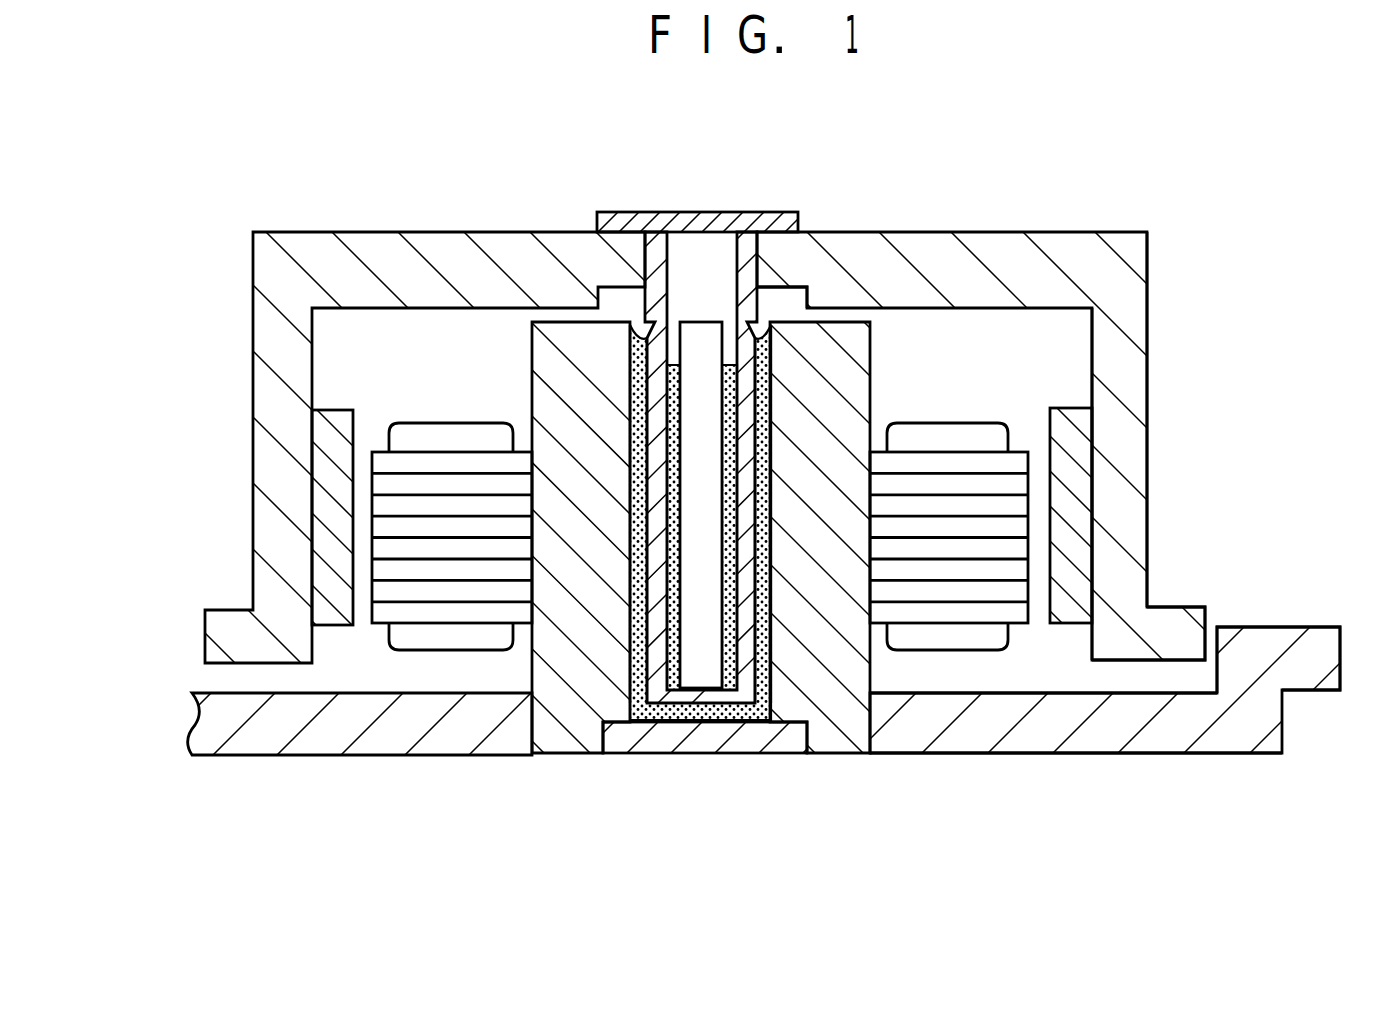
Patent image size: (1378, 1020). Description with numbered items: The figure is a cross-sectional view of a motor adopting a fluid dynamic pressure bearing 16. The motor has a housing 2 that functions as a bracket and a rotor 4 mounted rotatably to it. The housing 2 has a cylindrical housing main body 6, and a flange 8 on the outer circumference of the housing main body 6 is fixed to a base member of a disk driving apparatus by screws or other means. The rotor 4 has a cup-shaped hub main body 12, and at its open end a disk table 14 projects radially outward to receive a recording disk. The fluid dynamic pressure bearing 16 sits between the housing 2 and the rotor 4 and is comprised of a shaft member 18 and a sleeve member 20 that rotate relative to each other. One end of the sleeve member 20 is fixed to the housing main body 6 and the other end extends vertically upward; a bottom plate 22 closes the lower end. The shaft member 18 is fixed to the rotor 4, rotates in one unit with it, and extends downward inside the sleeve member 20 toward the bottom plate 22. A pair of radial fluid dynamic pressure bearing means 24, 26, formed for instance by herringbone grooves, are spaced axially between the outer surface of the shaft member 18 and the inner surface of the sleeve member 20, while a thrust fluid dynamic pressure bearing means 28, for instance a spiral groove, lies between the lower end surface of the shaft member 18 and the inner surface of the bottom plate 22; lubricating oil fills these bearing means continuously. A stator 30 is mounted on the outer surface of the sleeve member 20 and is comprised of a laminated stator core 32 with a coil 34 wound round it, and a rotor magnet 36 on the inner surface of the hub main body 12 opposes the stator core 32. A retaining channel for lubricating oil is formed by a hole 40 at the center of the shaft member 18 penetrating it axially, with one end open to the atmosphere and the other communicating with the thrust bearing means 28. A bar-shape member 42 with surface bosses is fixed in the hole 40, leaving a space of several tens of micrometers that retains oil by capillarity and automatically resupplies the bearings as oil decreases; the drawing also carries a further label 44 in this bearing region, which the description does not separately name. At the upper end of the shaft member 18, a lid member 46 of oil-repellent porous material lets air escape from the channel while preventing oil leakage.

The housing 2 is at (763, 730).
The rotor 4 is at (689, 414).
The housing main body 6 is at (914, 740).
The flange 8 is at (1310, 675).
The hub main body 12 is at (1138, 403).
The disk table 14 is at (1177, 618).
The fluid dynamic pressure bearing 16 is at (703, 572).
The shaft member 18 is at (772, 292).
The sleeve member 20 is at (553, 733).
The bottom plate 22 is at (630, 745).
The radial fluid dynamic pressure bearing means 24 is at (775, 680).
The radial fluid dynamic pressure bearing means 26 is at (770, 450).
The thrust fluid dynamic pressure bearing means 28 is at (664, 477).
The stator 30 is at (993, 655).
The stator core 32 is at (438, 460).
The coil 34 is at (418, 637).
The rotor magnet 36 is at (1087, 510).
The hole 40 is at (672, 335).
The bar-shape member 42 is at (701, 330).
The left bearing 44 is at (637, 330).
The lid member 46 is at (752, 300).